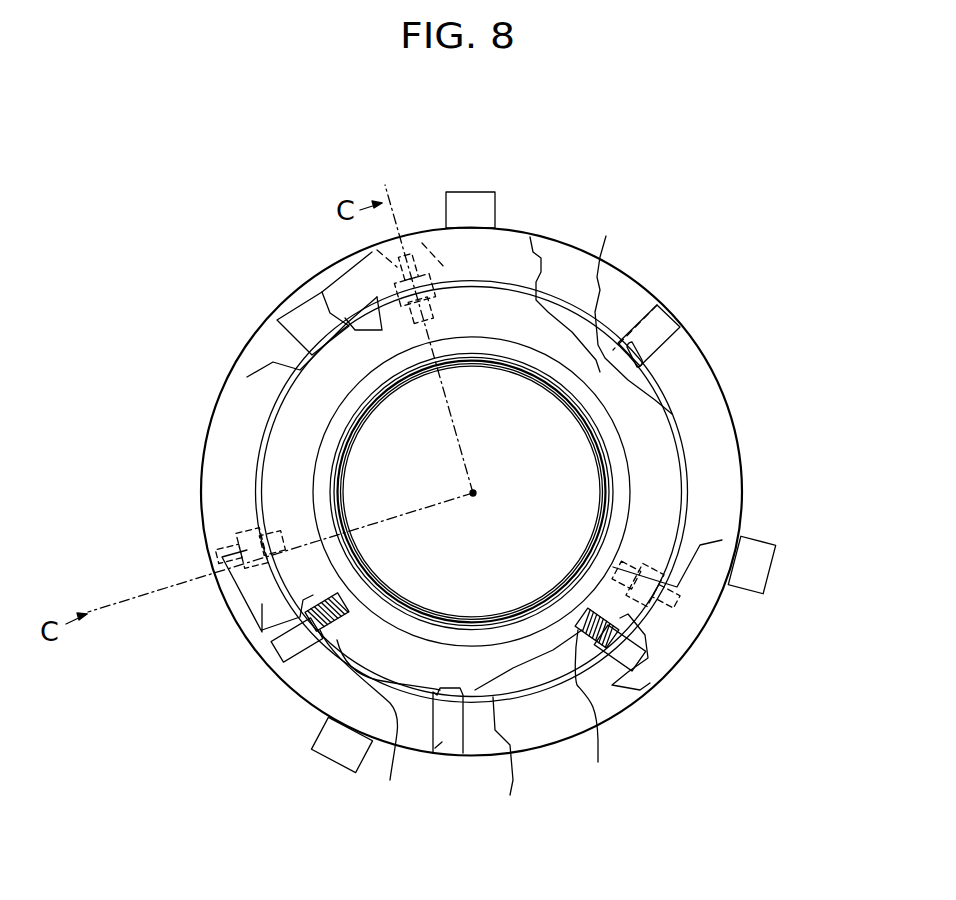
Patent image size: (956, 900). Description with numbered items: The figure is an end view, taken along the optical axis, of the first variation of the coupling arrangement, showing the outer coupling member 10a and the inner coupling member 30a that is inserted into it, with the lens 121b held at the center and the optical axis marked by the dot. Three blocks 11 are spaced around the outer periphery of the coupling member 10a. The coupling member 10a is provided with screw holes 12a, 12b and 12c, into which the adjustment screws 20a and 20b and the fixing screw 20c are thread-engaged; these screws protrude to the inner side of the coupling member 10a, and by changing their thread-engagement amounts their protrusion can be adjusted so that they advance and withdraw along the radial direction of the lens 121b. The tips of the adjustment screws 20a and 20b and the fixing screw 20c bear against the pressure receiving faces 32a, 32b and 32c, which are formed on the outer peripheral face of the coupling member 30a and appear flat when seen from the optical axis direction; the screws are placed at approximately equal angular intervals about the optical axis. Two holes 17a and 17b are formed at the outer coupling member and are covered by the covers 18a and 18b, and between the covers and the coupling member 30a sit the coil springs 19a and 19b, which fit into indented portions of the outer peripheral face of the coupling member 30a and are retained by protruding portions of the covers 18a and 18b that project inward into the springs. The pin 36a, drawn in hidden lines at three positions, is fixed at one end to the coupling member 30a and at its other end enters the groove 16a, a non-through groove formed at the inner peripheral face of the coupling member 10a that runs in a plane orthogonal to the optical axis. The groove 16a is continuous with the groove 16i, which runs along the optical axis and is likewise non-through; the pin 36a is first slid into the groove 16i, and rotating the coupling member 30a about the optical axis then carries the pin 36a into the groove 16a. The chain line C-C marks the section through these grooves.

The coupling member 10a is at (509, 492).
The mounting block 11 is at (561, 471).
The screw hole 12a is at (253, 305).
The screw hole 12b is at (646, 299).
The screw hole 12c is at (455, 765).
The groove 16a is at (465, 409).
The groove 16i is at (479, 438).
The hole 17a is at (697, 675).
The hole 17b is at (230, 695).
The cover 18a is at (636, 717).
The cover 18b is at (283, 700).
The spring 19a is at (549, 696).
The spring 19b is at (372, 718).
The adjustment screw 20a is at (243, 245).
The adjustment screw 20b is at (734, 284).
The fixing screw 20c is at (417, 787).
The coupling member 30a is at (537, 492).
The pressure receiving face 32a is at (247, 337).
The pressure receiving face 32b is at (601, 302).
The pressure receiving face 32c is at (509, 761).
The pin 36a is at (463, 376).
The lens 121b is at (513, 540).